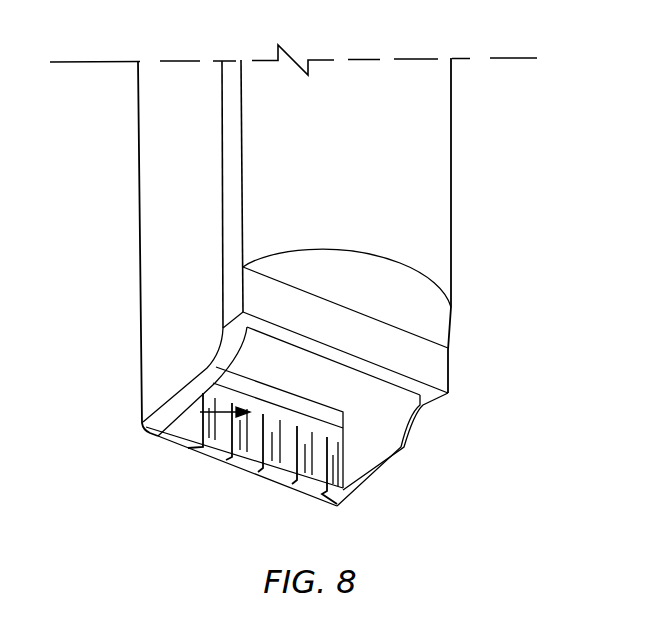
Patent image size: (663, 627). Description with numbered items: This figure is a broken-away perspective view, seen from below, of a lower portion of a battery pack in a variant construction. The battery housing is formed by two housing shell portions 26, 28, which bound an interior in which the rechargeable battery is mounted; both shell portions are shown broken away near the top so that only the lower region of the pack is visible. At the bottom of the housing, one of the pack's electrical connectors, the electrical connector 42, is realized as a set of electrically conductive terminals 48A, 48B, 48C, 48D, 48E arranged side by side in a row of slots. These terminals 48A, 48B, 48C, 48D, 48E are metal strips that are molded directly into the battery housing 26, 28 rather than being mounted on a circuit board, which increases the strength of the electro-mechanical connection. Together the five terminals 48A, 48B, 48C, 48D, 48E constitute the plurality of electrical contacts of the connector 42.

The housing shell portion 26 is at (444, 185).
The housing shell portion 28 is at (146, 243).
The electrical connector 42 is at (190, 408).
The terminal 48A is at (188, 450).
The terminal 48B is at (228, 460).
The terminal 48C is at (264, 474).
The terminal 48D is at (298, 488).
The terminal 48E is at (336, 503).